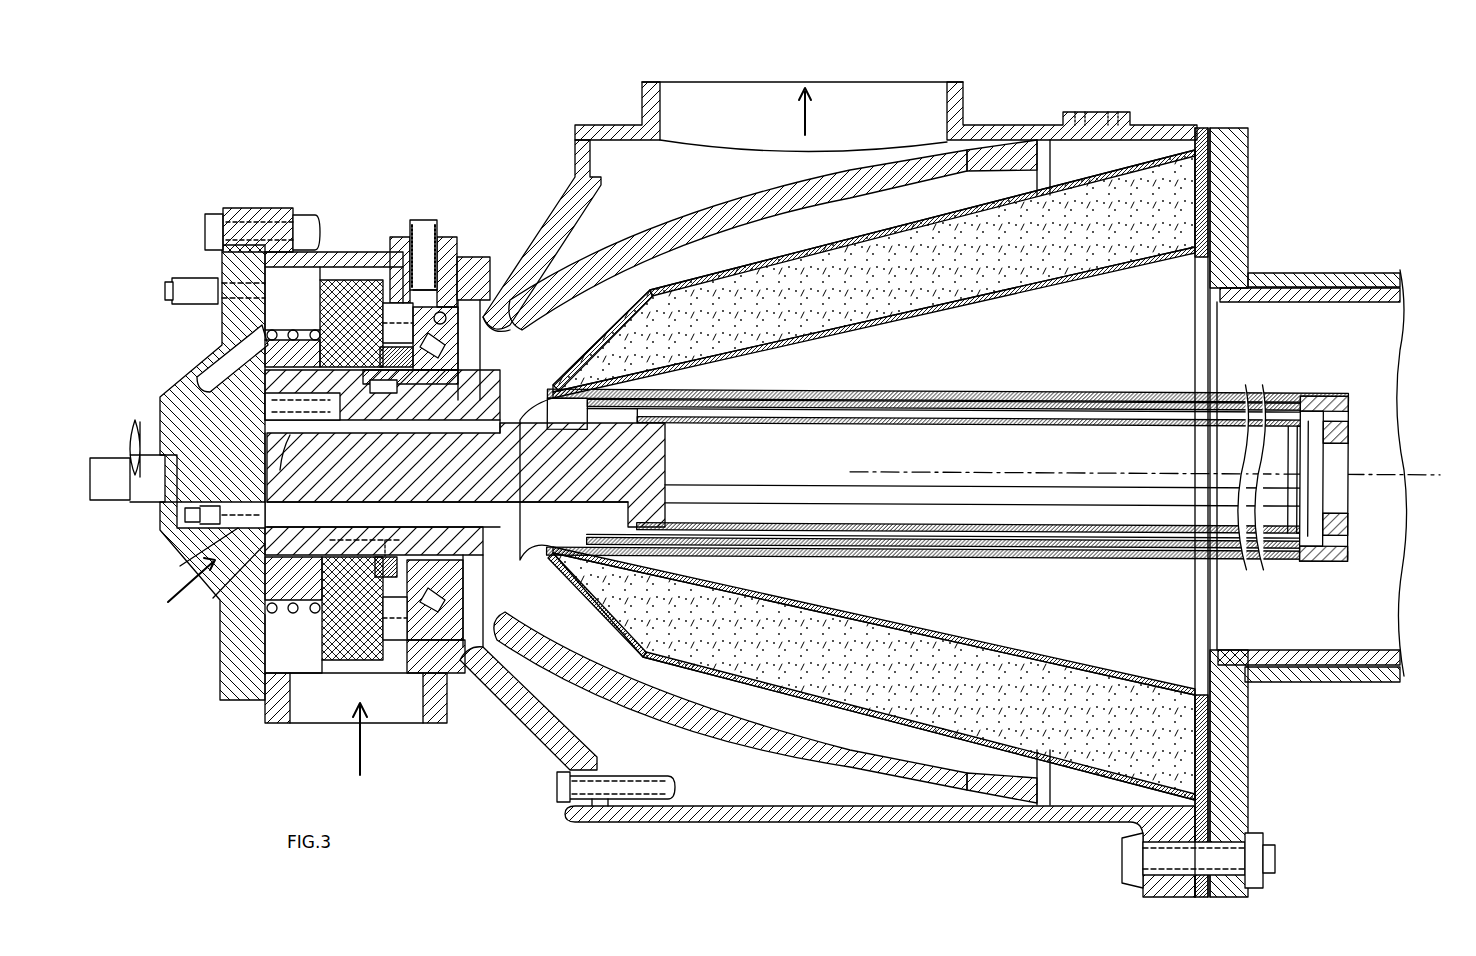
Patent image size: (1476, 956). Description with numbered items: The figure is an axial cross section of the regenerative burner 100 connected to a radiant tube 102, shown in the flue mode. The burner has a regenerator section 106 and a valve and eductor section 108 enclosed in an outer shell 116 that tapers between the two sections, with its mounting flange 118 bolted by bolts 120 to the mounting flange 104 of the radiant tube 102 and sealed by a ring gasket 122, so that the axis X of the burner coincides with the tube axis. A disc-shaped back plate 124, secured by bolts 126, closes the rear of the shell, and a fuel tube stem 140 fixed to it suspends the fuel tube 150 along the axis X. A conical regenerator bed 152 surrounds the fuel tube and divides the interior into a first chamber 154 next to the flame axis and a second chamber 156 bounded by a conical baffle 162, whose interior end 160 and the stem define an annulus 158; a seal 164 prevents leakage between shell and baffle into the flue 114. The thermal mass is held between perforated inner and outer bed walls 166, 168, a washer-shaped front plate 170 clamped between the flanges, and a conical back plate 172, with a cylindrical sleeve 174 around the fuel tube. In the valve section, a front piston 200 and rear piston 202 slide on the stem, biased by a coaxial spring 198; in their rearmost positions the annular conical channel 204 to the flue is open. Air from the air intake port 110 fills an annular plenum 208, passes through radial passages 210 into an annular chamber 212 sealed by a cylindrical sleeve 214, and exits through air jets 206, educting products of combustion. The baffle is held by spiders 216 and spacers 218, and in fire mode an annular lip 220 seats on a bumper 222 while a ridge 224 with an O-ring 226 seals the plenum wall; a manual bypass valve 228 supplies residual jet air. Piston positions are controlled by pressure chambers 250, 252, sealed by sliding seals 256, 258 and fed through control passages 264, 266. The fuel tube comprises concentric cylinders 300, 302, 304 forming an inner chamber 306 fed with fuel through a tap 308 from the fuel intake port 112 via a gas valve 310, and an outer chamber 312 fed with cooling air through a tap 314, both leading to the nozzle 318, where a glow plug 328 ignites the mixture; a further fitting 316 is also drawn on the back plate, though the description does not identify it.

The regenerative burner 100 is at (706, 862).
The radiant tube 102 is at (1320, 672).
The mounting flange of the radiant tube 104 is at (1247, 780).
The regenerator section 106 is at (1220, 62).
The valve and eductor section 108 is at (468, 62).
The air intake port 110 is at (318, 752).
The fuel intake port 112 is at (180, 579).
The flue 114 is at (886, 117).
The outer shell 116 is at (892, 830).
The mounting flange 118 is at (1150, 888).
The bolts 120 is at (1275, 860).
The ring gasket 122 is at (1210, 898).
The back plate 124 is at (178, 379).
The bolts 126 is at (262, 220).
The fuel tube stem 140 is at (466, 475).
The fuel tube 150 is at (1010, 566).
The regenerator bed 152 is at (1055, 262).
The first chamber 154 is at (1060, 330).
The second chamber 156 is at (782, 237).
The annulus 158 is at (508, 507).
The interior end of the baffle 160 is at (502, 331).
The baffle 162 is at (648, 220).
The seal 164 is at (1007, 148).
The inner bed wall 166 is at (881, 328).
The outer bed wall 168 is at (866, 240).
The front plate 170 is at (1188, 264).
The back plate of the bed 172 is at (630, 292).
The cylindrical sleeve 174 is at (571, 572).
The coaxial spring 198 is at (292, 332).
The front piston 200 is at (355, 283).
The rear piston 202 is at (330, 253).
The annular conical channel 204 is at (532, 233).
The air jets 206 is at (445, 341).
The annular plenum 208 is at (302, 660).
The radial passages 210 is at (400, 323).
The annular chamber 212 is at (398, 357).
The cylindrical sleeve 214 is at (400, 555).
The spiders 216 is at (661, 742).
The spacers 218 is at (603, 810).
The annular lip 220 is at (440, 308).
The annular bumper 222 is at (478, 300).
The radially projecting ridge 224 is at (390, 236).
The O-ring 226 is at (393, 243).
The manual bypass valve 228 is at (460, 242).
The first pressure chamber 250 is at (380, 417).
The second pressure chamber 252 is at (243, 359).
The sliding seal 256 is at (318, 410).
The sliding seal 258 is at (435, 380).
The control passage 264 is at (370, 528).
The control passage 266 is at (297, 454).
The cylinder 300 is at (973, 390).
The cylinder 302 is at (1043, 390).
The cylinder 304 is at (1110, 388).
The inner chamber 306 is at (828, 405).
The tap 308 is at (447, 514).
The gas valve 310 is at (180, 527).
The outer cylindrical chamber 312 is at (881, 388).
The tap 314 is at (630, 435).
The sensor 316 is at (205, 358).
The nozzle 318 is at (1352, 400).
The glow plug 328 is at (995, 483).
The axis X is at (1417, 485).